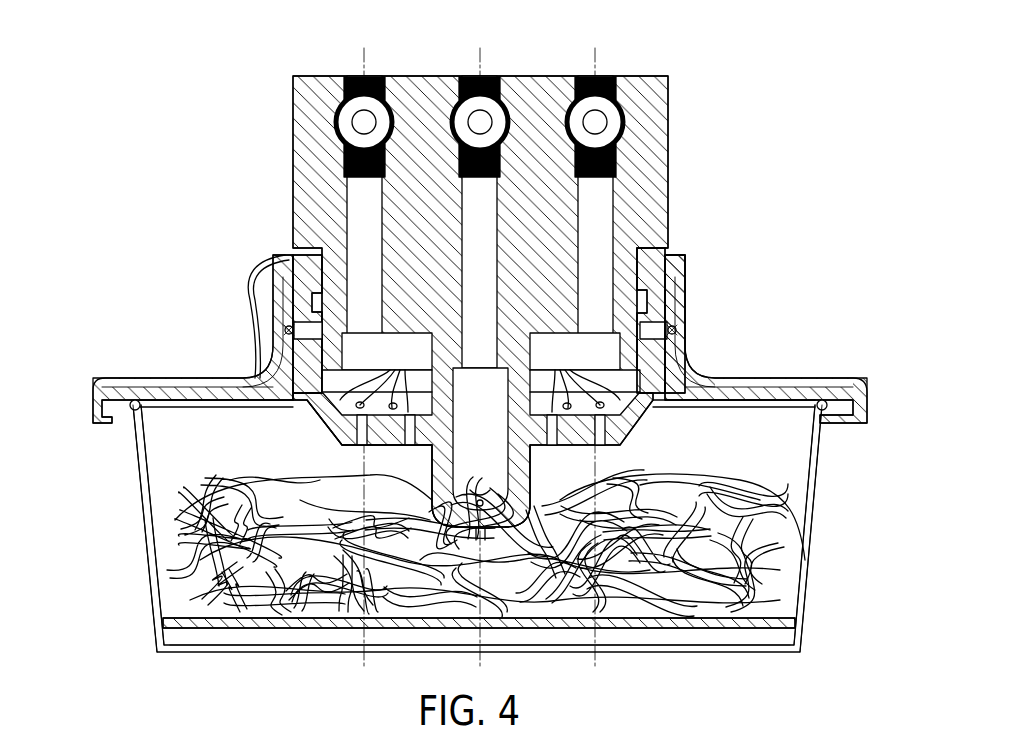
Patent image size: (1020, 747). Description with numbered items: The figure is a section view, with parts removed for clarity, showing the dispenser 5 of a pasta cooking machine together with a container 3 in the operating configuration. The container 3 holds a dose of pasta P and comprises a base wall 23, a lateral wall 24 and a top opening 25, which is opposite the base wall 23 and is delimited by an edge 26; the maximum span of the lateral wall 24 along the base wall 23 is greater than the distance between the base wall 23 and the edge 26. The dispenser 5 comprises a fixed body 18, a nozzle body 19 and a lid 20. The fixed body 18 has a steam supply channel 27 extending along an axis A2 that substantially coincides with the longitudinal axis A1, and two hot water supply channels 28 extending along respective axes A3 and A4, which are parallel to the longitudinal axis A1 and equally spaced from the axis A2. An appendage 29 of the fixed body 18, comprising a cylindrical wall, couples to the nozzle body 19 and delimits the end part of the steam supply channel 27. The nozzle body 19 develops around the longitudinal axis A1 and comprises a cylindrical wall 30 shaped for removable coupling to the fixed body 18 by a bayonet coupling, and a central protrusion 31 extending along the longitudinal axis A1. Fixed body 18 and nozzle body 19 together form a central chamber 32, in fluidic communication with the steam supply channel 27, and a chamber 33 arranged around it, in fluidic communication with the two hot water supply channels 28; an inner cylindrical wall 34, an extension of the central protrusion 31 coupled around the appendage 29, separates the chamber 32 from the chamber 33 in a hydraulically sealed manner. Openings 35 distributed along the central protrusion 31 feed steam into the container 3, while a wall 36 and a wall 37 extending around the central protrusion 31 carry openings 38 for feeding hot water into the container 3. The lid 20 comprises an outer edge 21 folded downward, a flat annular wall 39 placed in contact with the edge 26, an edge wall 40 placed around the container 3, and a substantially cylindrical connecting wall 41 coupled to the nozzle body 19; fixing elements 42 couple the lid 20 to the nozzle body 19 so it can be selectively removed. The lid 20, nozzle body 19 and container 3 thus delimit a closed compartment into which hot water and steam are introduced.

The container 3 is at (483, 556).
The dispenser 5 is at (250, 166).
The fixed body 18 is at (680, 118).
The nozzle body 19 is at (650, 424).
The lid 20 is at (768, 372).
The outer edge 21 is at (107, 407).
The base wall 23 is at (300, 640).
The lateral wall 24 is at (143, 498).
The top opening 25 is at (188, 416).
The edge 26 is at (824, 410).
The steam supply channel 27 is at (485, 220).
The hot water supply channels 28 is at (357, 220).
The appendage 29 is at (502, 343).
The cylindrical wall 30 is at (650, 273).
The central protrusion 31 is at (437, 458).
The central chamber 32 is at (488, 432).
The chamber 33 is at (318, 388).
The inner cylindrical wall 34 is at (440, 372).
The openings 35 is at (481, 507).
The wall 36 is at (343, 447).
The wall 37 is at (826, 420).
The openings 38 is at (481, 389).
The annular wall 39 is at (187, 396).
The edge wall 40 is at (853, 403).
The connecting wall 41 is at (675, 291).
The fixing elements 42 is at (287, 330).
The dose of pasta P is at (720, 640).
The longitudinal axis A1 is at (480, 61).
The axis A2 is at (480, 658).
The axis A3 is at (364, 57).
The axis A4 is at (595, 61).